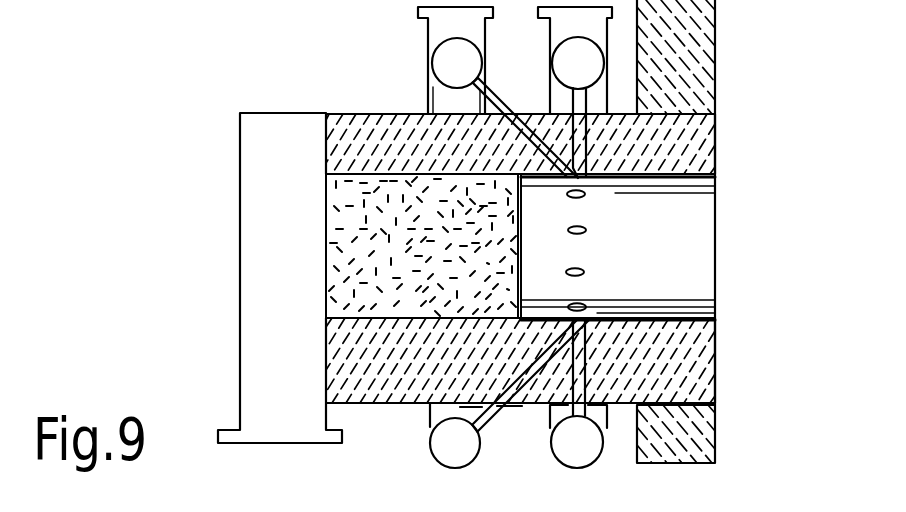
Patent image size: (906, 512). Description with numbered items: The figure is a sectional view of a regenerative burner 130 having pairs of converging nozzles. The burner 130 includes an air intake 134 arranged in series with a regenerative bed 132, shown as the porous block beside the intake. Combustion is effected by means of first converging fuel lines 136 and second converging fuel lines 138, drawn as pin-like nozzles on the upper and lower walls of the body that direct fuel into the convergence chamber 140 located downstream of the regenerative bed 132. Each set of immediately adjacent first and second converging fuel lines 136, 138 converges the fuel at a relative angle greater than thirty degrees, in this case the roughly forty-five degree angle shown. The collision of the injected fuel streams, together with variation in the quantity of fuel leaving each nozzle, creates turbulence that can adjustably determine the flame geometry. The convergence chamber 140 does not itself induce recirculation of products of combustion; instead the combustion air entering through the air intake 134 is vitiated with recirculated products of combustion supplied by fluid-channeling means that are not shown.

The burner 130 is at (332, 98).
The regenerative bed 132 is at (333, 260).
The air intake 134 is at (270, 378).
The first converging fuel lines 136 is at (516, 110).
The second converging fuel lines 138 is at (589, 180).
The convergence chamber 140 is at (566, 187).